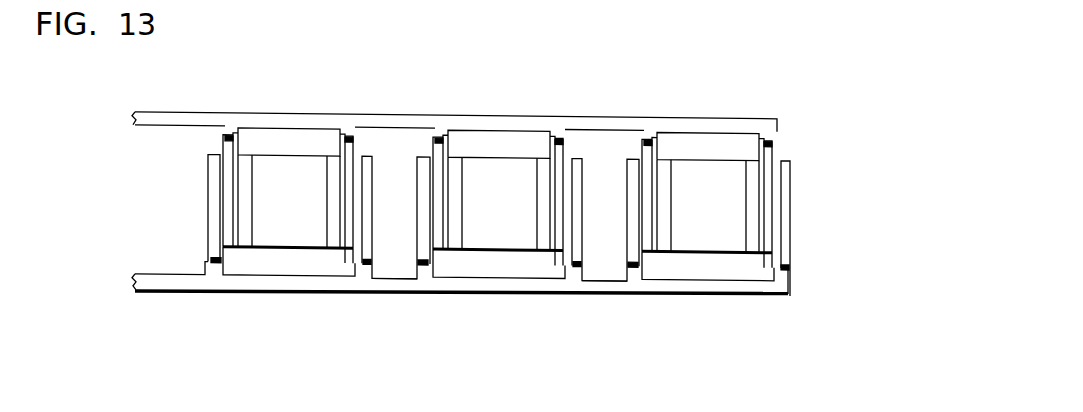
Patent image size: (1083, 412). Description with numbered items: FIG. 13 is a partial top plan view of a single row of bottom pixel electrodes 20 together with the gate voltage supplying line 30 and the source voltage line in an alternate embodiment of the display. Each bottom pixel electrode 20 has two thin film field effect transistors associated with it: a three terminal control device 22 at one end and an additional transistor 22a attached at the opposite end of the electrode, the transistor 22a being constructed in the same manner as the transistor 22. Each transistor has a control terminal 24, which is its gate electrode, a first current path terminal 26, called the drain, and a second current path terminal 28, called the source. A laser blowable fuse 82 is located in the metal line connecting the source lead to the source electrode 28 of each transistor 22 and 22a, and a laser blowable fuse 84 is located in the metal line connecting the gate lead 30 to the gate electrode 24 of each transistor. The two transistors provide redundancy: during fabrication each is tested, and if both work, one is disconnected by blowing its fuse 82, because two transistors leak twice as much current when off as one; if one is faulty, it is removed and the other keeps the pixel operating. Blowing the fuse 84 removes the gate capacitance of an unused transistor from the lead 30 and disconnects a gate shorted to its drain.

The bottom pixel electrode 20 is at (280, 246).
The three terminal control device 22 is at (196, 216).
The additional transistor 22a is at (399, 236).
The control terminal 24 is at (232, 168).
The first current path terminal 26 is at (337, 166).
The second current path terminal 28 is at (207, 188).
The gate voltage supplying line 30 is at (258, 123).
The laser blowable fuse 82 is at (222, 259).
The laser blowable fuse 84 is at (226, 133).